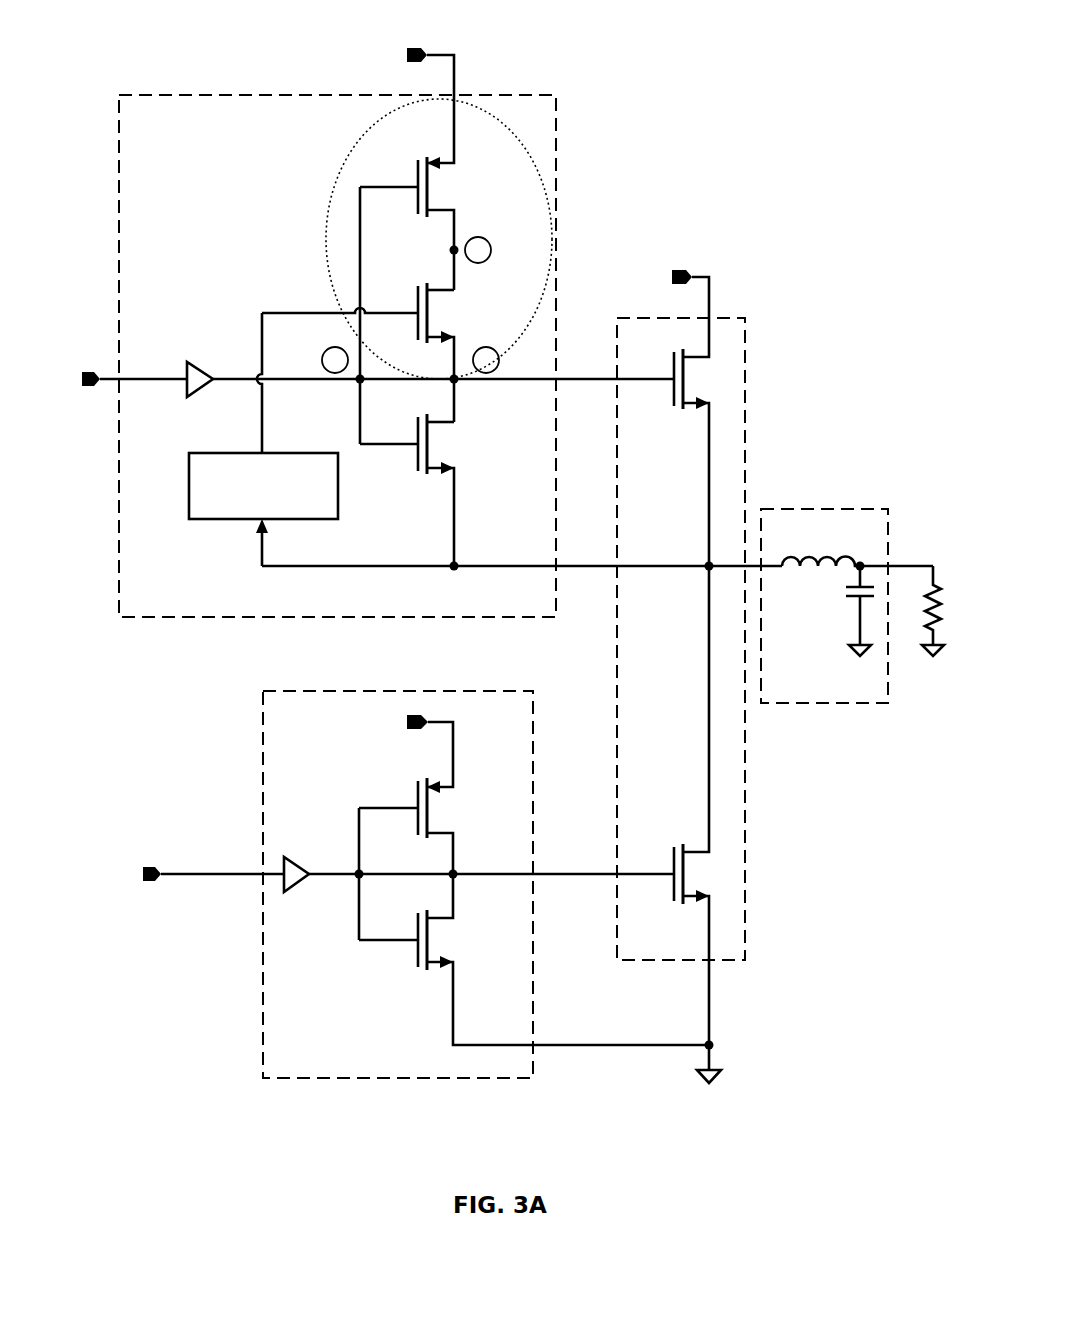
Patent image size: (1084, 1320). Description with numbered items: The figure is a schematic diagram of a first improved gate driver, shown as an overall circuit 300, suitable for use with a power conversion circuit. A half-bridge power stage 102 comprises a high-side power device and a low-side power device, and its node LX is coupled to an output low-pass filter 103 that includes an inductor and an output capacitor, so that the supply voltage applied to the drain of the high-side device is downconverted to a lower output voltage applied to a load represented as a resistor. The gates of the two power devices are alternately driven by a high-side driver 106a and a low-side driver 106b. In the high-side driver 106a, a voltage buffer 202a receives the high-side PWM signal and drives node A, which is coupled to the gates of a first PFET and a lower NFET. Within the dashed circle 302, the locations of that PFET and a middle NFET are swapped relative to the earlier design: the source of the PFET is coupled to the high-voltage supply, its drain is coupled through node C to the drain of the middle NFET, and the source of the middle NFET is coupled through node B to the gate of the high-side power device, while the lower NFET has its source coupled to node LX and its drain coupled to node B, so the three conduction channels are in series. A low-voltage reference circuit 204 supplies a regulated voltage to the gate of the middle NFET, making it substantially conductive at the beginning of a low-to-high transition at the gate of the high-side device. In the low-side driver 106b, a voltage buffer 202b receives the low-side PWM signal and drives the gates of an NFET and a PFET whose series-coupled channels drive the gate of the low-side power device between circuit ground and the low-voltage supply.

The switching converter circuit 300 is at (122, 42).
The dashed circle 302 is at (330, 247).
The voltage buffer 202a is at (197, 358).
The voltage buffer 202b is at (298, 890).
The low-voltage reference circuit 204 is at (205, 521).
The high-side driver 106a is at (134, 620).
The low-side driver 106b is at (263, 760).
The half-bridge power stage 102 is at (746, 318).
The low-pass filter 103 is at (817, 509).